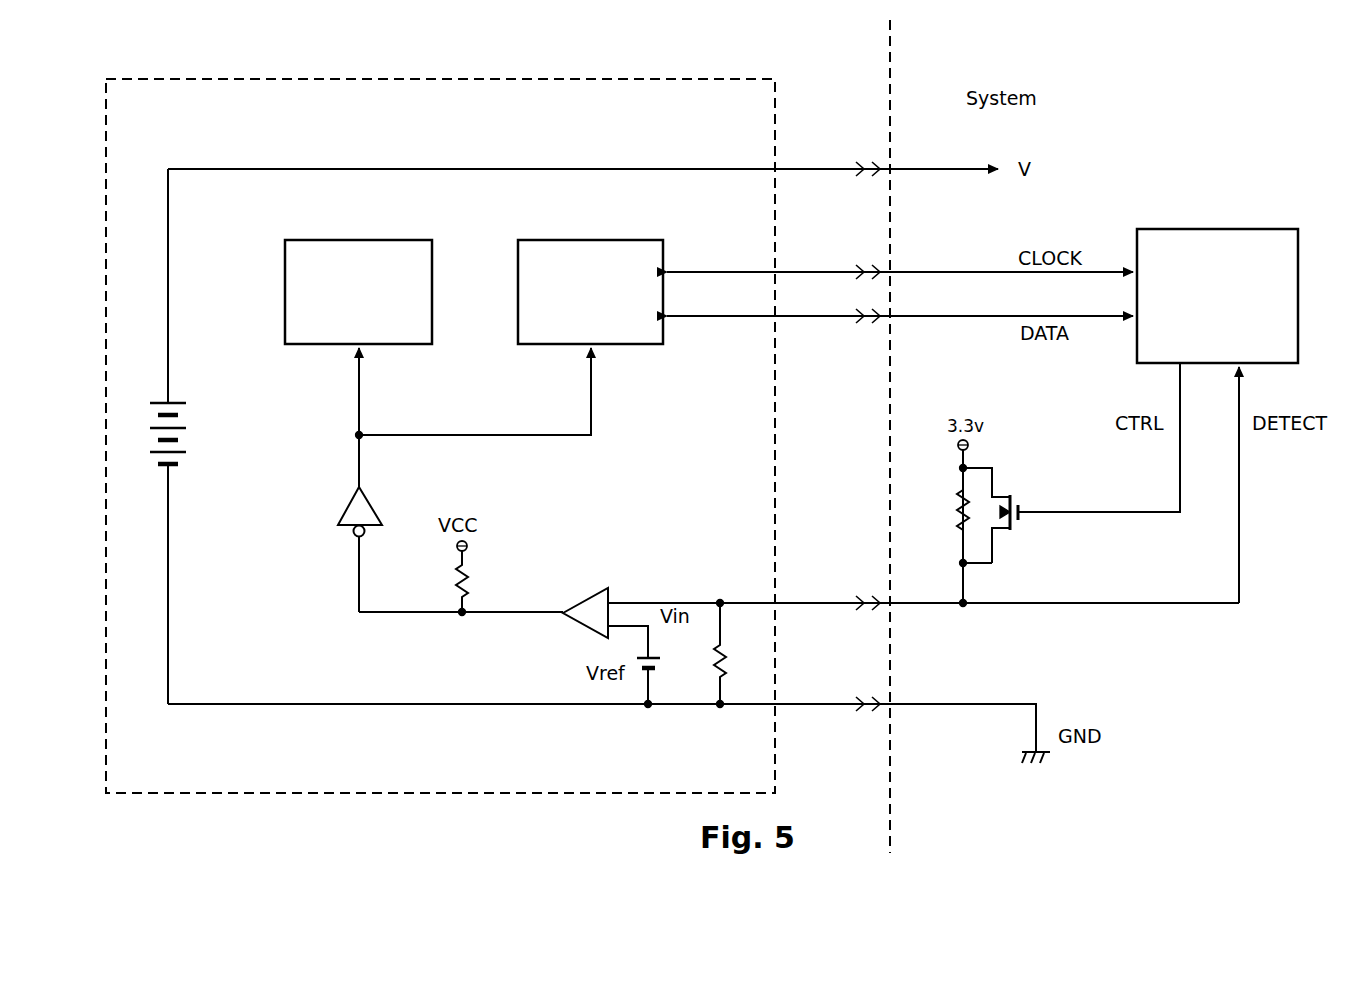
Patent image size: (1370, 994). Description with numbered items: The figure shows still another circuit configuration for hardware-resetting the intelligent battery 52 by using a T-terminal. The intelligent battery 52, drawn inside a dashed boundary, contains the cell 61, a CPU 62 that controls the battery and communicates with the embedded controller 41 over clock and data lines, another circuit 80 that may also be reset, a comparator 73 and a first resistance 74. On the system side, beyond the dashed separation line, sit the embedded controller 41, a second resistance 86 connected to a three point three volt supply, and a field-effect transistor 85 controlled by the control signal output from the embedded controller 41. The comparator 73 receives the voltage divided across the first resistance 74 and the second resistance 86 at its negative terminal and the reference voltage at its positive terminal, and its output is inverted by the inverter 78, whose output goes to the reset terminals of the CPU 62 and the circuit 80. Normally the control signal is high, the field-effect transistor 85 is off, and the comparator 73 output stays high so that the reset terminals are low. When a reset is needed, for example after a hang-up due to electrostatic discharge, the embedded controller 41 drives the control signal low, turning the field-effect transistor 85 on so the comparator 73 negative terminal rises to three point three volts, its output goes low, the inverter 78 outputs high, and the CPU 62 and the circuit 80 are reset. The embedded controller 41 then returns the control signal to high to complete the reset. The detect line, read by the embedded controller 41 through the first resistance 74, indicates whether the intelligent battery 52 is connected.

The intelligent battery 52 is at (618, 78).
The another circuit 80 is at (368, 239).
The CPU 62 is at (597, 239).
The embedded controller 41 is at (1218, 228).
The cell 61 is at (212, 428).
The inverter 78 is at (372, 505).
The comparator 73 is at (582, 627).
The resistance 74 is at (714, 670).
The field-effect transistor 85 is at (1030, 488).
The resistance 86 is at (956, 520).